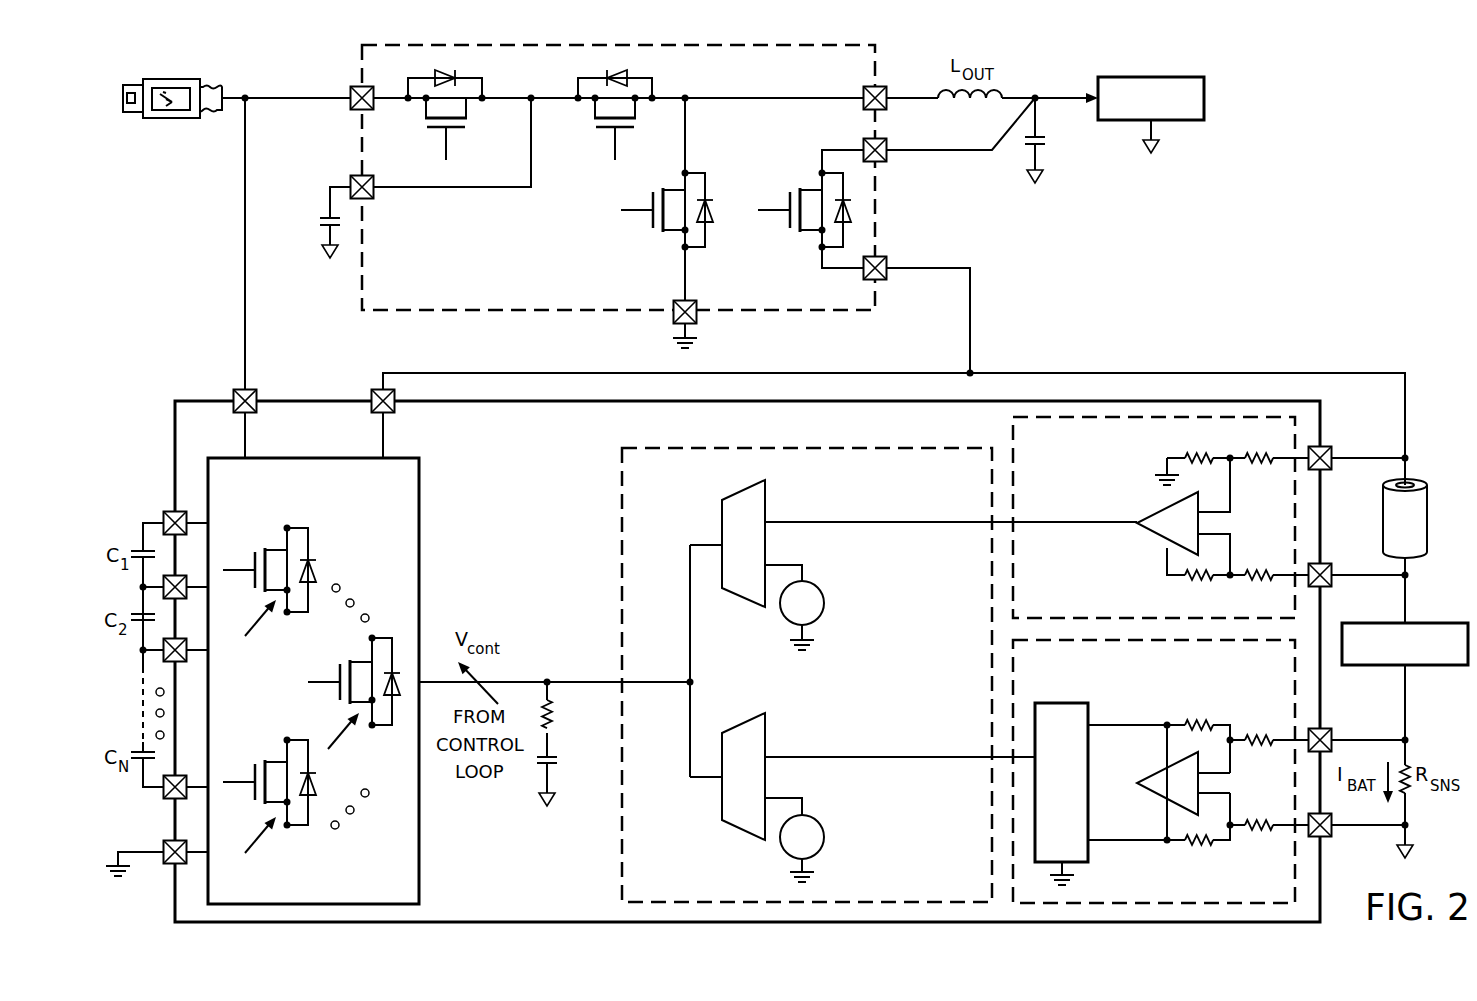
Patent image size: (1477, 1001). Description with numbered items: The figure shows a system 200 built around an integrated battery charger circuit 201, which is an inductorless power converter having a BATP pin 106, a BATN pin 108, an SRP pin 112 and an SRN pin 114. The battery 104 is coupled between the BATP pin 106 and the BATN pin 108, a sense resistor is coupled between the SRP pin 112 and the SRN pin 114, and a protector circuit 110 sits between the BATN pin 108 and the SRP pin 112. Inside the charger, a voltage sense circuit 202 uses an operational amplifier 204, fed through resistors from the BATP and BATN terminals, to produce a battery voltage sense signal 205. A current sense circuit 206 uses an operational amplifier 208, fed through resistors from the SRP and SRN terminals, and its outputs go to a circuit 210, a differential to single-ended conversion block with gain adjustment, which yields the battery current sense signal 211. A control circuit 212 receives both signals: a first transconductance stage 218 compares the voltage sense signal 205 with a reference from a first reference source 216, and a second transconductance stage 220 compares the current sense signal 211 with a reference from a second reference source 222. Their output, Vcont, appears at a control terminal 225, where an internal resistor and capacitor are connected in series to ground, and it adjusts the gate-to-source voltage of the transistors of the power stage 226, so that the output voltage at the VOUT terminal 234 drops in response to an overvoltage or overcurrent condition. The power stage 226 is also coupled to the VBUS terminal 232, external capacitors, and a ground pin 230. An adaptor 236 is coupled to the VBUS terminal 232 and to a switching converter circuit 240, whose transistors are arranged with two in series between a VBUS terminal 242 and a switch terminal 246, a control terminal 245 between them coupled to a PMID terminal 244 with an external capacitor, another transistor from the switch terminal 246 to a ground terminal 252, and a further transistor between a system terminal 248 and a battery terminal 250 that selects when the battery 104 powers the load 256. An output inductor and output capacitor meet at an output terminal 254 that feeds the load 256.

The system 200 is at (1354, 101).
The integrated battery charger circuit 201 is at (170, 438).
The voltage sense circuit 202 is at (1093, 589).
The operational amplifier 204 is at (1152, 546).
The battery voltage sense signal 205 is at (918, 520).
The current sense circuit 206 is at (1279, 885).
The operational amplifier 208 is at (1150, 776).
The circuit 210 is at (1088, 803).
The battery current sense signal 211 is at (918, 752).
The control circuit 212 is at (612, 522).
The first reference source 216 is at (818, 585).
The first transconductance stage 218 is at (720, 531).
The second transconductance stage 220 is at (720, 797).
The second reference source 222 is at (818, 818).
The control terminal 225 is at (550, 676).
The power stage 226 is at (428, 552).
The PGND pin 230 is at (170, 863).
The VBUS terminal 232 is at (233, 392).
The VOUT terminal 234 is at (371, 392).
The adaptor 236 is at (172, 125).
The switching converter circuit 240 is at (546, 270).
The VBUS terminal 242 is at (350, 106).
The PMID terminal 244 is at (375, 196).
The control terminal 245 is at (535, 106).
The switch terminal 246 is at (862, 106).
The system terminal 248 is at (889, 158).
The battery terminal 250 is at (889, 277).
The PGND pin of switching charger 252 is at (697, 320).
The output terminal 254 is at (1038, 93).
The load 256 is at (1204, 86).
The battery 104 is at (1412, 558).
The BATP pin 106 is at (1325, 446).
The BATN pin 108 is at (1325, 563).
The protector circuit 110 is at (1432, 668).
The SRP pin 112 is at (1325, 728).
The SRN pin 114 is at (1325, 840).